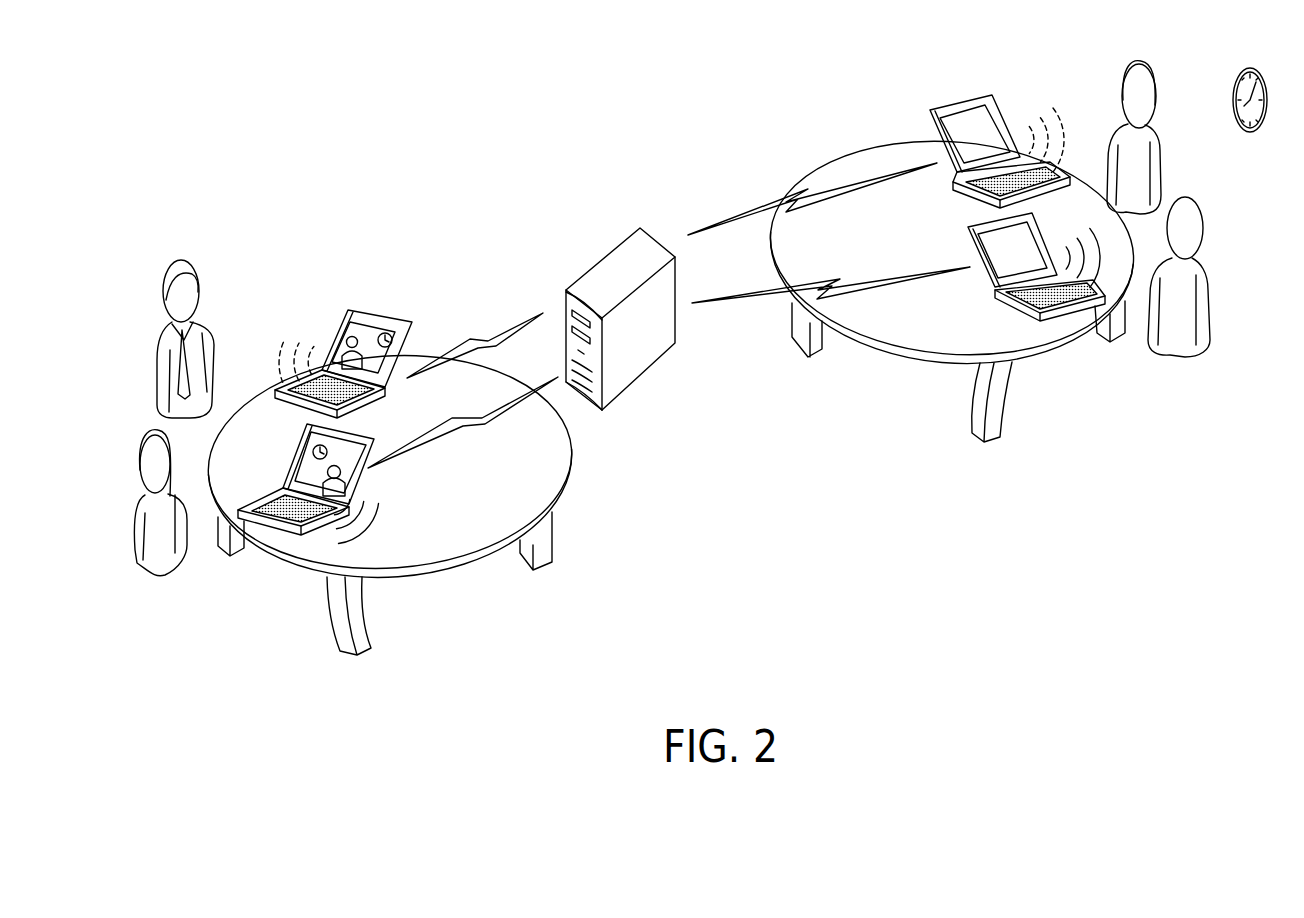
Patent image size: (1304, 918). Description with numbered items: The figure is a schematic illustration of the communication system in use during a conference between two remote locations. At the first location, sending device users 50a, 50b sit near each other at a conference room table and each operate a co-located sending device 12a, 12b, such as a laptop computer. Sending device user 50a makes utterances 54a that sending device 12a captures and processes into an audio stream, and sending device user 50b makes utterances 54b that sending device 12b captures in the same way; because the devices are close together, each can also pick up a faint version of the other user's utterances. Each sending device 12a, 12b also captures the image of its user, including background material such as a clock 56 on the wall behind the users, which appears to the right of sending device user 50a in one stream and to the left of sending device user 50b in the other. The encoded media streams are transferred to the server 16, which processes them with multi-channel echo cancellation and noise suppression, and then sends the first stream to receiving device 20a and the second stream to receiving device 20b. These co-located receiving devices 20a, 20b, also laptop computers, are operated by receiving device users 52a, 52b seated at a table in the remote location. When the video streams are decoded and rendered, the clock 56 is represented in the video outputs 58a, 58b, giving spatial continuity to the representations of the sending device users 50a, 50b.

The sending device 12a is at (940, 108).
The sending device 12b is at (985, 225).
The server 16 is at (606, 258).
The receiving device 20a is at (400, 322).
The receiving device 20b is at (357, 433).
The sending device user 50a is at (1168, 80).
The sending device user 50b is at (1210, 232).
The receiving device user 52a is at (157, 300).
The receiving device user 52b is at (132, 443).
The utterances 54a is at (1045, 118).
The utterances 54b is at (1083, 240).
The clock 56 is at (1265, 72).
The video output 58a is at (367, 320).
The video output 58b is at (343, 481).